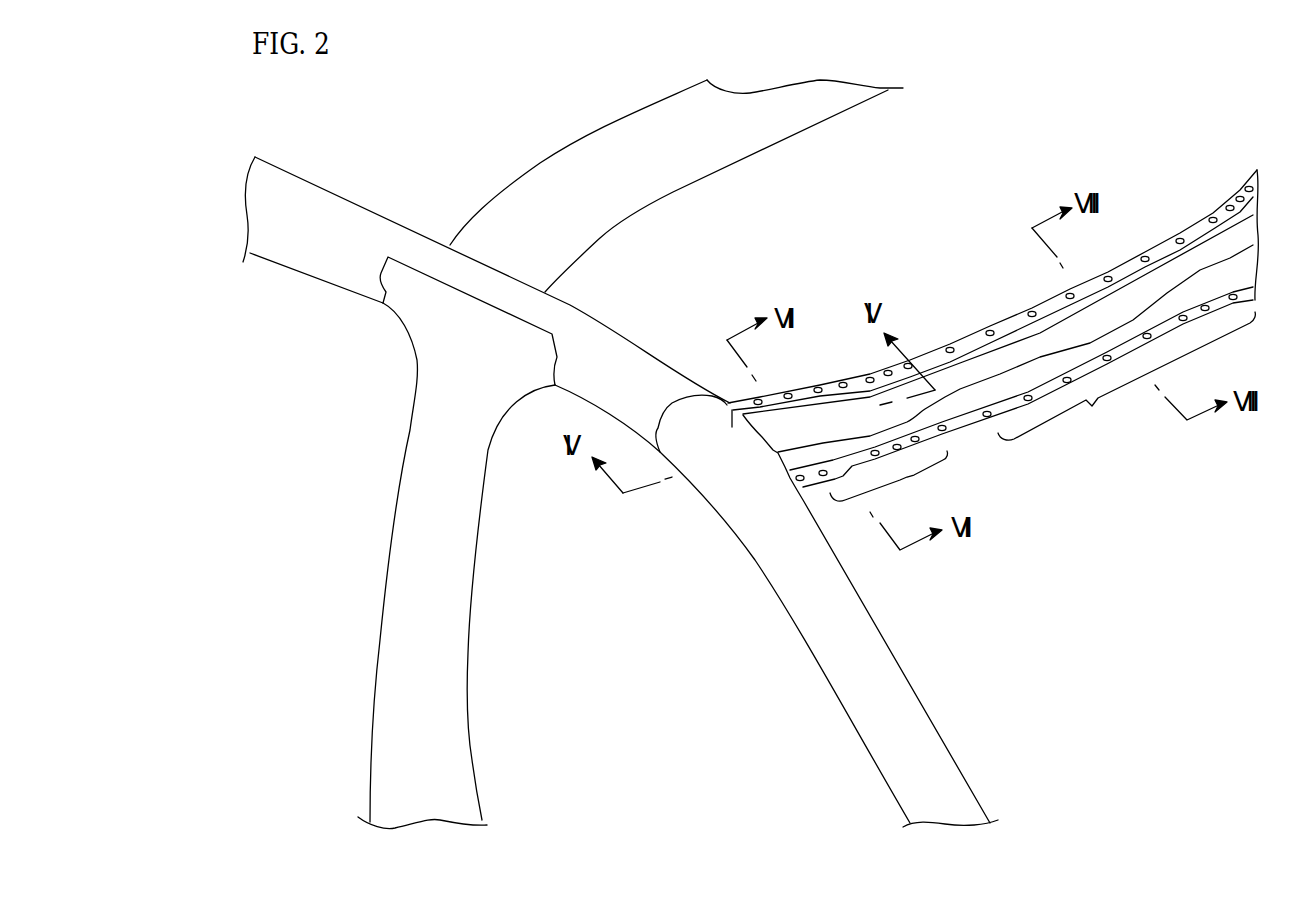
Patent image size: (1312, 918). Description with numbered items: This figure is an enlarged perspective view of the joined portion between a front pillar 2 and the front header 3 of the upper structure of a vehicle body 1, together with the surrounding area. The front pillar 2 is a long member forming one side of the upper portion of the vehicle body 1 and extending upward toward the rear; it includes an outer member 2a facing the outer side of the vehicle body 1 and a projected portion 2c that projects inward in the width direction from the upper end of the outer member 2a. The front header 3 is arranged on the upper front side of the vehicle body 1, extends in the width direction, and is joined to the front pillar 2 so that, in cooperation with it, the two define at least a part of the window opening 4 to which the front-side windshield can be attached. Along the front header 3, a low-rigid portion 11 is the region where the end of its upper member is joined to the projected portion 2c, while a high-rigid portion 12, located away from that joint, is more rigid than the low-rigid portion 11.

The vehicle body 1 is at (1145, 118).
The front pillar 2 is at (852, 698).
The outer member 2a is at (722, 467).
The projected portion 2c is at (728, 401).
The front header 3 is at (1156, 239).
The window opening 4 is at (958, 587).
The low-rigid portion 11 is at (889, 483).
The high-rigid portion 12 is at (1126, 380).